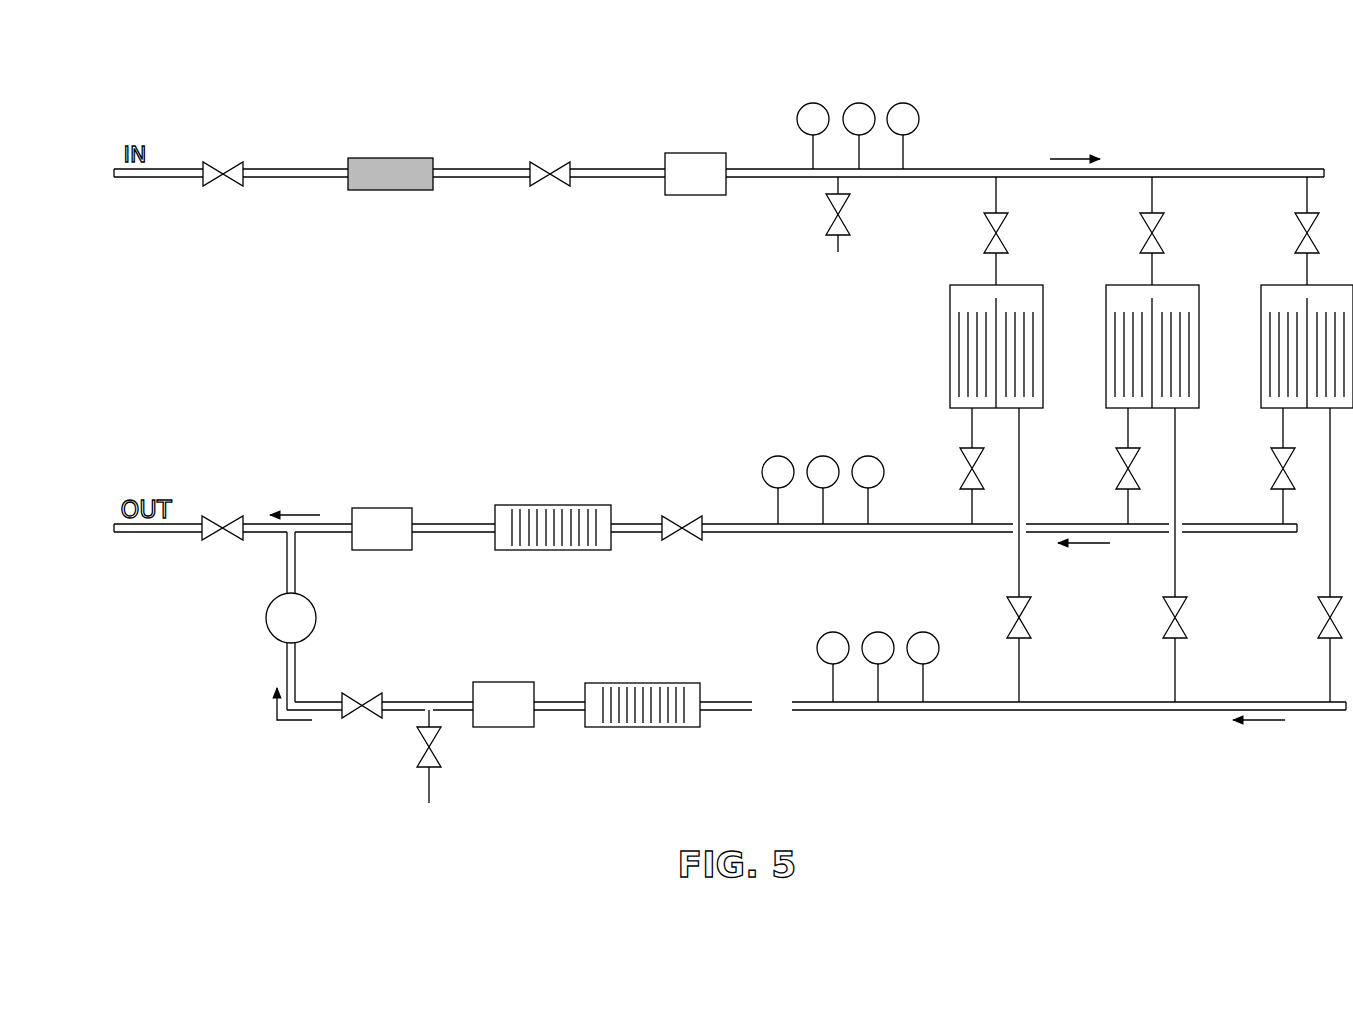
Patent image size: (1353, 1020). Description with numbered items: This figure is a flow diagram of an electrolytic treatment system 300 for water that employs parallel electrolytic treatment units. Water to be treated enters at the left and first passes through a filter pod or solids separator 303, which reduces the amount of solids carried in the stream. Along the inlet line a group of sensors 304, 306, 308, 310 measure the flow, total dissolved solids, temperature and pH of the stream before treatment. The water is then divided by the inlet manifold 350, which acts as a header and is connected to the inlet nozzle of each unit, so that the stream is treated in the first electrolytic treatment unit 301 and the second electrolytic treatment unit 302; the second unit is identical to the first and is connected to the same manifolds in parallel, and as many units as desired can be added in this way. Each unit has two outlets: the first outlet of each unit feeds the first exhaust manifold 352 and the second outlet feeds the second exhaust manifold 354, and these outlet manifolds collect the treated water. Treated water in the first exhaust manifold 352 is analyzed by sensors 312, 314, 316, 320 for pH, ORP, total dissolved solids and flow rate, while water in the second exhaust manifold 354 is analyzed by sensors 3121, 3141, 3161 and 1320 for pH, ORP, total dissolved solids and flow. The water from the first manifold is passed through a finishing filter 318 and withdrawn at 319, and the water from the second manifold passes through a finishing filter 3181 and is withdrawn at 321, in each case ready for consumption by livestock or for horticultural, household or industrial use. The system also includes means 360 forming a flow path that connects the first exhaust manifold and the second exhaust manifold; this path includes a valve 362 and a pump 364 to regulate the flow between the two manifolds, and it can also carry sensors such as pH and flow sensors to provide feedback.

The electrolytic treatment system 300 is at (1135, 73).
The first electrolytic treatment unit 301 is at (950, 303).
The second electrolytic treatment unit 302 is at (1105, 303).
The filter pod or solids separator 303 is at (393, 158).
The flow sensor 304 is at (697, 153).
The sensor 306 is at (812, 103).
The sensor 308 is at (858, 103).
The sensor 310 is at (904, 103).
The sensor 312 is at (869, 456).
The sensor 314 is at (823, 456).
The sensor 316 is at (775, 456).
The finishing filter 318 is at (553, 505).
The withdrawal point 319 is at (155, 534).
The flow sensor 320 is at (378, 508).
The withdrawal point 321 is at (432, 790).
The inlet manifold 350 is at (1231, 168).
The first exhaust manifold 352 is at (1237, 533).
The second exhaust manifold 354 is at (1107, 712).
The means forming a flow path 360 is at (584, 660).
The valve 362 is at (370, 716).
The pump 364 is at (266, 622).
The flow sensor 1320 is at (512, 727).
The sensor 3121 is at (925, 632).
The sensor 3141 is at (895, 632).
The sensor 3161 is at (830, 632).
The finishing filter 3181 is at (645, 683).